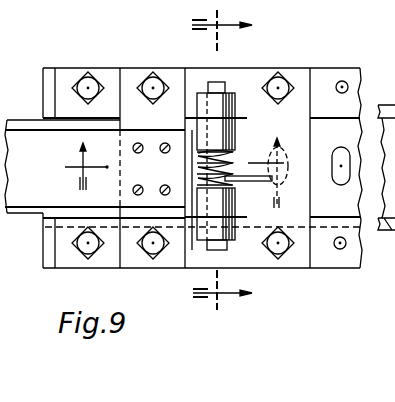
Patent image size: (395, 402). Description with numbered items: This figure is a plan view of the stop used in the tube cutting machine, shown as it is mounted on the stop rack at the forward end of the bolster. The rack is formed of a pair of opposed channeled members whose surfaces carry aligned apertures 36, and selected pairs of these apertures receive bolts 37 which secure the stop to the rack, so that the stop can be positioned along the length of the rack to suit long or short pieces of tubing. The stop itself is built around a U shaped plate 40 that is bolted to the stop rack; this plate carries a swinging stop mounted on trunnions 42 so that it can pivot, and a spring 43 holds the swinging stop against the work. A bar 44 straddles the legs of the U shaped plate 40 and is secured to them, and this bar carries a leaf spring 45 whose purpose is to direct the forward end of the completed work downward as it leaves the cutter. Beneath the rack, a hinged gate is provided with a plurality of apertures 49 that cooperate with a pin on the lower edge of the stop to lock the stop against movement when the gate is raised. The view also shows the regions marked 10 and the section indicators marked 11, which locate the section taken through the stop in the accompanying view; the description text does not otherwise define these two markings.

The plate 10 is at (153, 170).
The section line 11 is at (222, 163).
The aligned apertures 36 is at (346, 82).
The bolts 37 is at (152, 80).
The U shaped plate 40 is at (252, 72).
The trunnions 42 is at (222, 82).
The spring 43 is at (230, 162).
The bar 44 is at (167, 72).
The leaf spring 45 is at (38, 143).
The apertures 49 is at (290, 152).